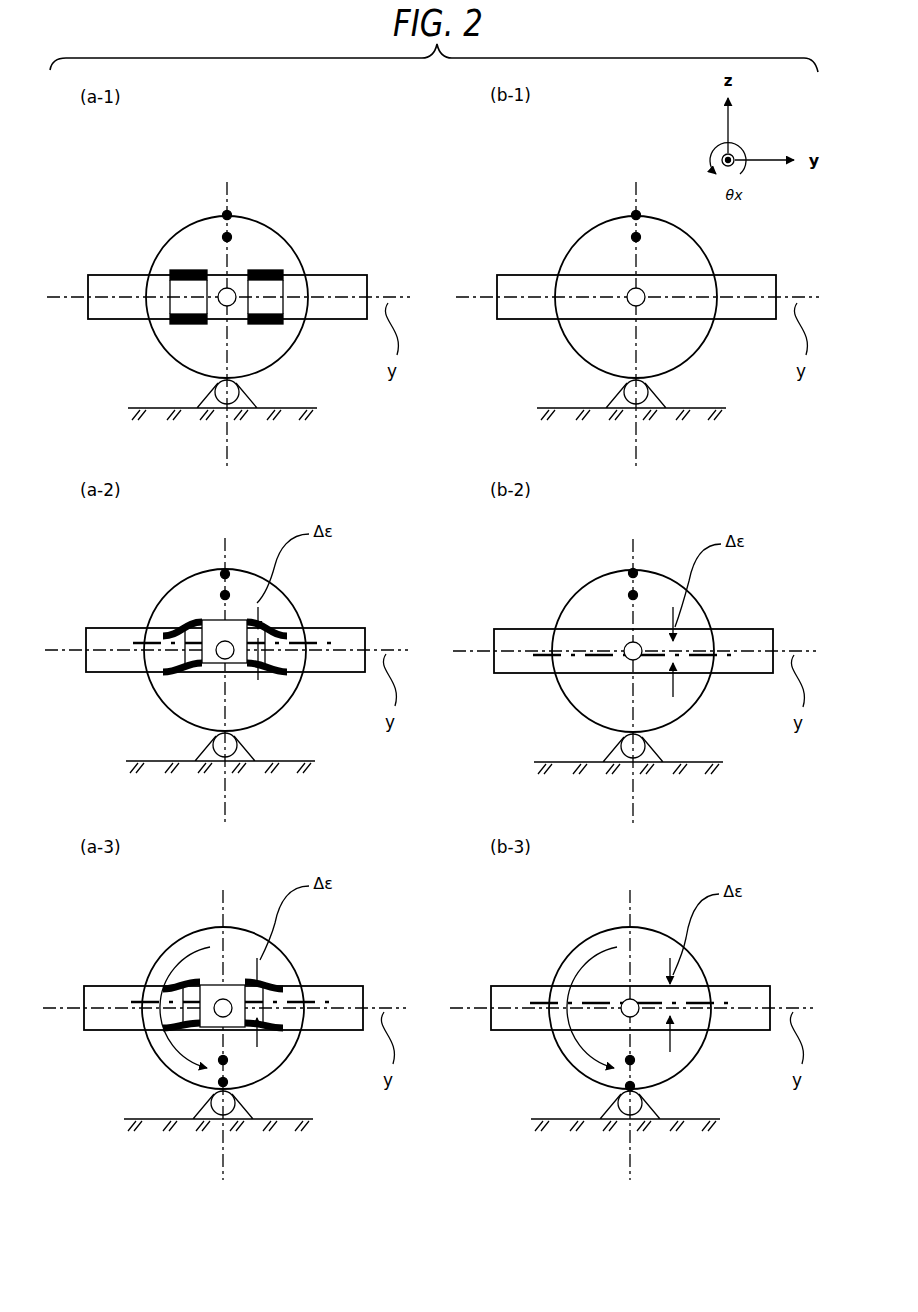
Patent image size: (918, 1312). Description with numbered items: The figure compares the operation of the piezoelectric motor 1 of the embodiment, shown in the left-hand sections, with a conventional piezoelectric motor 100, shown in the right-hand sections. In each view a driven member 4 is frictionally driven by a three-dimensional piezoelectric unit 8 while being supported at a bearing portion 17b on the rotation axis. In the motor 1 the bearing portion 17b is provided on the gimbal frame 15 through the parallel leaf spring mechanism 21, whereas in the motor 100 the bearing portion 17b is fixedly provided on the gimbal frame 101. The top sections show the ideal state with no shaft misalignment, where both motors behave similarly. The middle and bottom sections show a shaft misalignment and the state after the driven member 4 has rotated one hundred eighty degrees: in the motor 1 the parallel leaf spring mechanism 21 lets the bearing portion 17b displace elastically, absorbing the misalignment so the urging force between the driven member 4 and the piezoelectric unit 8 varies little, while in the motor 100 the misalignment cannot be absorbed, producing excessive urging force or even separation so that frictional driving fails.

The piezoelectric motor 1 is at (225, 617).
The conventional piezoelectric motor 100 is at (638, 617).
The driven member 4 is at (452, 645).
The three-dimensional piezoelectric unit 8 is at (426, 746).
The gimbal frame 15 is at (246, 626).
The gimbal frame 101 is at (658, 626).
The bearing portion 17b is at (396, 641).
The parallel leaf spring mechanism 21 is at (225, 585).